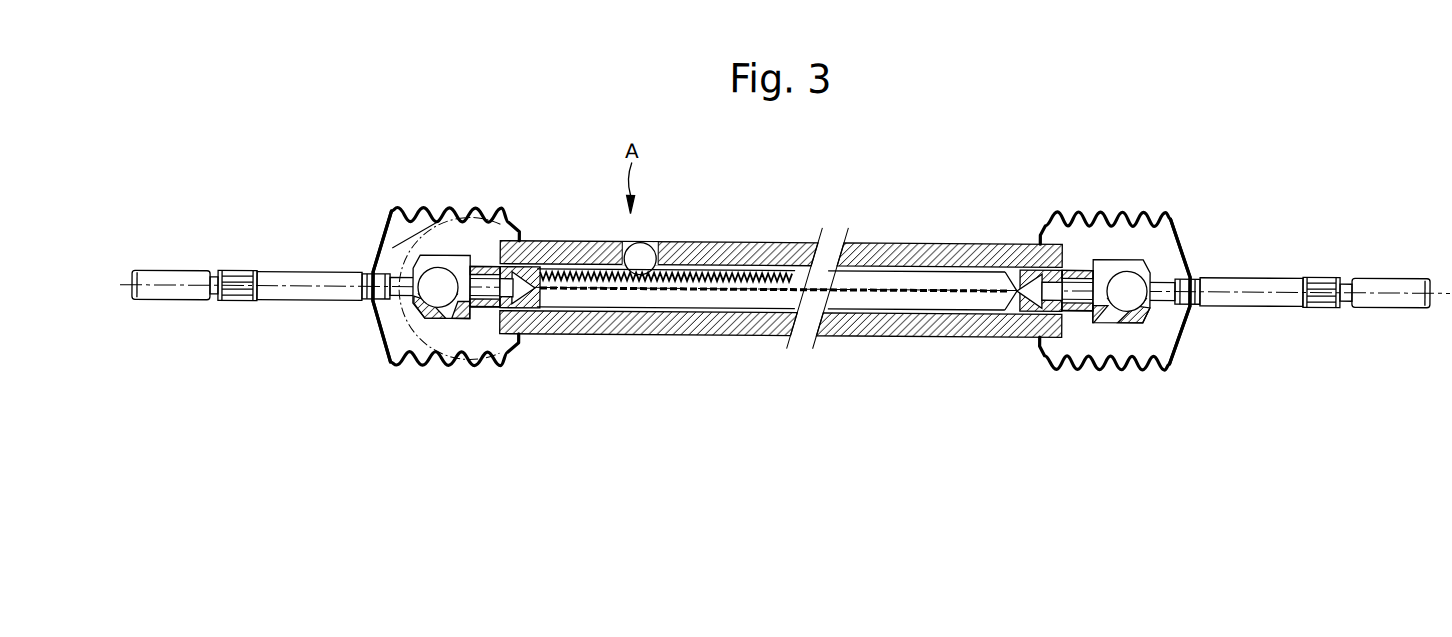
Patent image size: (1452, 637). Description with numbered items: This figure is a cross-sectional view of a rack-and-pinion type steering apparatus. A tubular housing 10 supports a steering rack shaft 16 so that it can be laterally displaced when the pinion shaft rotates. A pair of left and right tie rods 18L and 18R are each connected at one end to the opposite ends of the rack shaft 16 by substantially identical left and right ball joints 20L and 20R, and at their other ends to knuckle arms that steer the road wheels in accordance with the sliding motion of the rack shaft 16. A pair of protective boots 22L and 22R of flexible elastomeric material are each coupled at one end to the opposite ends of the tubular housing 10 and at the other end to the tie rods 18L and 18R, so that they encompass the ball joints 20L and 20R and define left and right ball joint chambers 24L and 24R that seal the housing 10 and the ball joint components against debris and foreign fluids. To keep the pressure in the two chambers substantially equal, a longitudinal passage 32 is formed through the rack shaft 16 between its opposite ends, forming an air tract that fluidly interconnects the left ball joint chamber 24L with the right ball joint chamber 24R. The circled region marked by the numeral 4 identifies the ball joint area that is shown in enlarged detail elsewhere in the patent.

The detail circle of ball joint region 4 is at (410, 243).
The tubular housing 10 is at (613, 336).
The steering rack shaft 16 is at (938, 302).
The left tie rod 18L is at (172, 274).
The right tie rod 18R is at (1395, 272).
The left ball joint 20L is at (439, 243).
The right ball joint 20R is at (1117, 243).
The left protective boot 22L is at (467, 368).
The right protective boot 22R is at (1102, 364).
The left ball joint chamber 24L is at (392, 250).
The right ball joint chamber 24R is at (1167, 250).
The longitudinal passage 32 is at (885, 291).